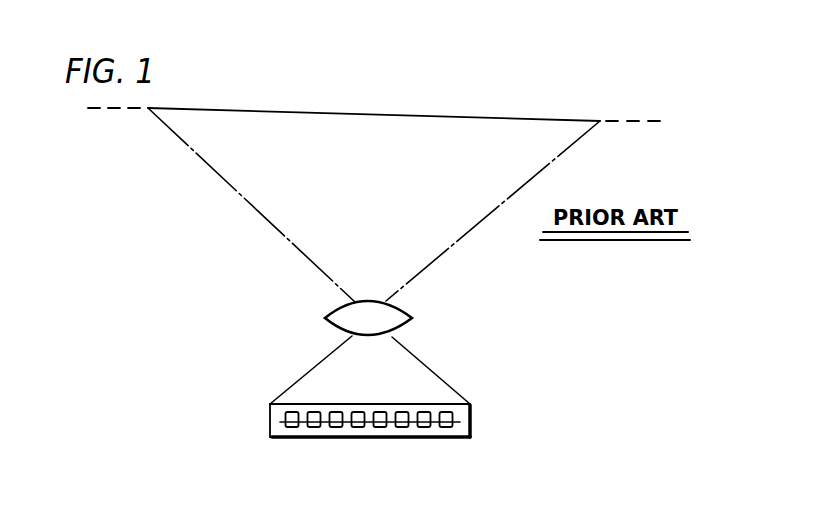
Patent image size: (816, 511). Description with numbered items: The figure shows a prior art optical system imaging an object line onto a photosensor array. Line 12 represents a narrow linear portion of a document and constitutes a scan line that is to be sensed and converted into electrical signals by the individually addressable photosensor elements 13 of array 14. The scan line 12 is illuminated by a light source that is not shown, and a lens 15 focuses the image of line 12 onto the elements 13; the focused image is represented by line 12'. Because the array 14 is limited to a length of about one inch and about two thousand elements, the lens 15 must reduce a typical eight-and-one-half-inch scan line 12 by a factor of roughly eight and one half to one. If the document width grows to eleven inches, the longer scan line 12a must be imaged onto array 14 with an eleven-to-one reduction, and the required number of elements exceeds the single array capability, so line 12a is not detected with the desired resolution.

The scan line 12 is at (344, 188).
The scan line 12a is at (640, 120).
The lens 15 is at (412, 318).
The array 14 is at (471, 408).
The photosensor elements 13 is at (297, 411).
The line 12' is at (370, 398).